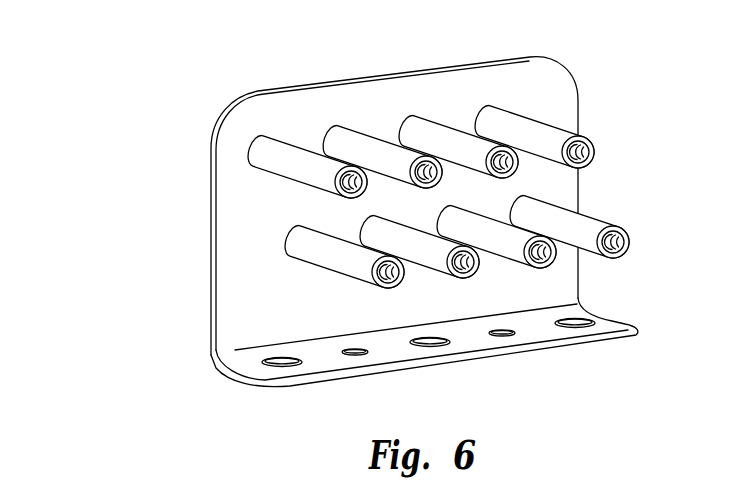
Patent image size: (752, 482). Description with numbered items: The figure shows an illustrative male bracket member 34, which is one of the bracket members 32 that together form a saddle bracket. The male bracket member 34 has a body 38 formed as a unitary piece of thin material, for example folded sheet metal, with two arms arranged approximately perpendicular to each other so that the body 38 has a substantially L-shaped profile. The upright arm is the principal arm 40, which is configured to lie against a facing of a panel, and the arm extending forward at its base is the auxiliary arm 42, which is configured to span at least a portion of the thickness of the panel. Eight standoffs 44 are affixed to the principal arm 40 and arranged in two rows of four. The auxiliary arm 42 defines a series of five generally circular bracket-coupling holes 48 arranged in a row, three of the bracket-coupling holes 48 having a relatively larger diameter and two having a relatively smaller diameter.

The bracket member 32 is at (128, 47).
The male bracket member 34 is at (140, 100).
The body 38 is at (212, 265).
The principal arm 40 is at (211, 175).
The auxiliary arm 42 is at (636, 328).
The standoff 44 is at (586, 137).
The bracket-coupling hole 48 is at (278, 357).